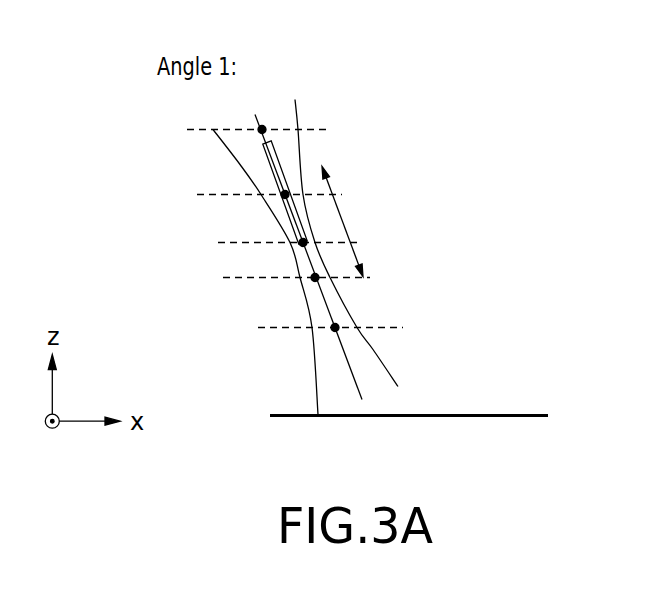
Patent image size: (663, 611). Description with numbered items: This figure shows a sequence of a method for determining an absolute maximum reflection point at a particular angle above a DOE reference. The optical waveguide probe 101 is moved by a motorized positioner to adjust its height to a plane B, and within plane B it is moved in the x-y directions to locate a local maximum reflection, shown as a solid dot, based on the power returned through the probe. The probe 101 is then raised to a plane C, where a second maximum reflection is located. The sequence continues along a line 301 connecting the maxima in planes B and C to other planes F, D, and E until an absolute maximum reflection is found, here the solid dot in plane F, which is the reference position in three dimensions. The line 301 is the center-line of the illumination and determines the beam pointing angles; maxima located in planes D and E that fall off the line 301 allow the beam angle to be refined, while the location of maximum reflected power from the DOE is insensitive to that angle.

The optical waveguide probe 101 is at (277, 160).
The line 301 is at (327, 302).
The plane C is at (246, 132).
The plane D is at (257, 195).
The plane F is at (275, 244).
The plane E is at (286, 279).
The plane B is at (319, 329).
The DOE reference DOE is at (409, 436).